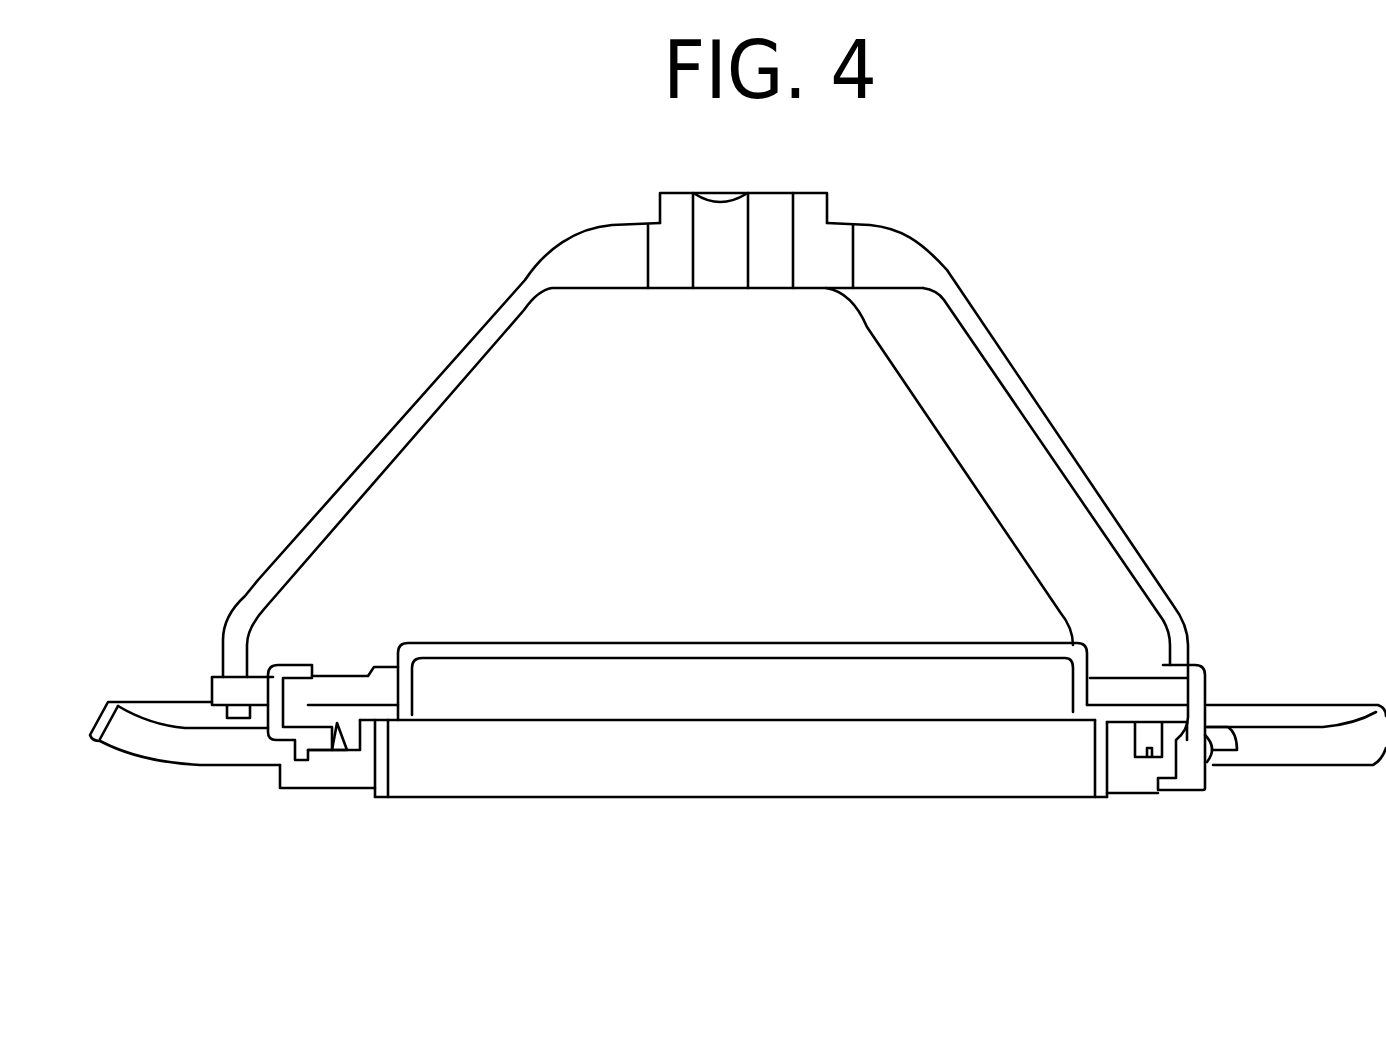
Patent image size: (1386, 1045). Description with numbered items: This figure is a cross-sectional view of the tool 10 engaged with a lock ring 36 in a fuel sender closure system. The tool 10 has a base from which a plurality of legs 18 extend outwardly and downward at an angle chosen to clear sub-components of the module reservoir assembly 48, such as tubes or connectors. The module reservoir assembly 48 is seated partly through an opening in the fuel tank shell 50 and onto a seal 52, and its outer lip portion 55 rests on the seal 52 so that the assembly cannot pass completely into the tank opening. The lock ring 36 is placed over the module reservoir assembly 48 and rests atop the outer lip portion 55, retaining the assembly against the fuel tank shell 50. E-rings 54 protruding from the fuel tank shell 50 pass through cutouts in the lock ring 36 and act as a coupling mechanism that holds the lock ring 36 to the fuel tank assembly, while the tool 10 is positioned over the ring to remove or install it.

The tool 10 is at (905, 231).
The legs 18 is at (1018, 397).
The lock ring 36 is at (1140, 670).
The module reservoir assembly (MRA) 48 is at (527, 643).
The fuel tank shell 50 is at (213, 767).
The seal 52 is at (1133, 793).
The E-rings 54 is at (273, 665).
The outer lip portion 55 is at (333, 710).